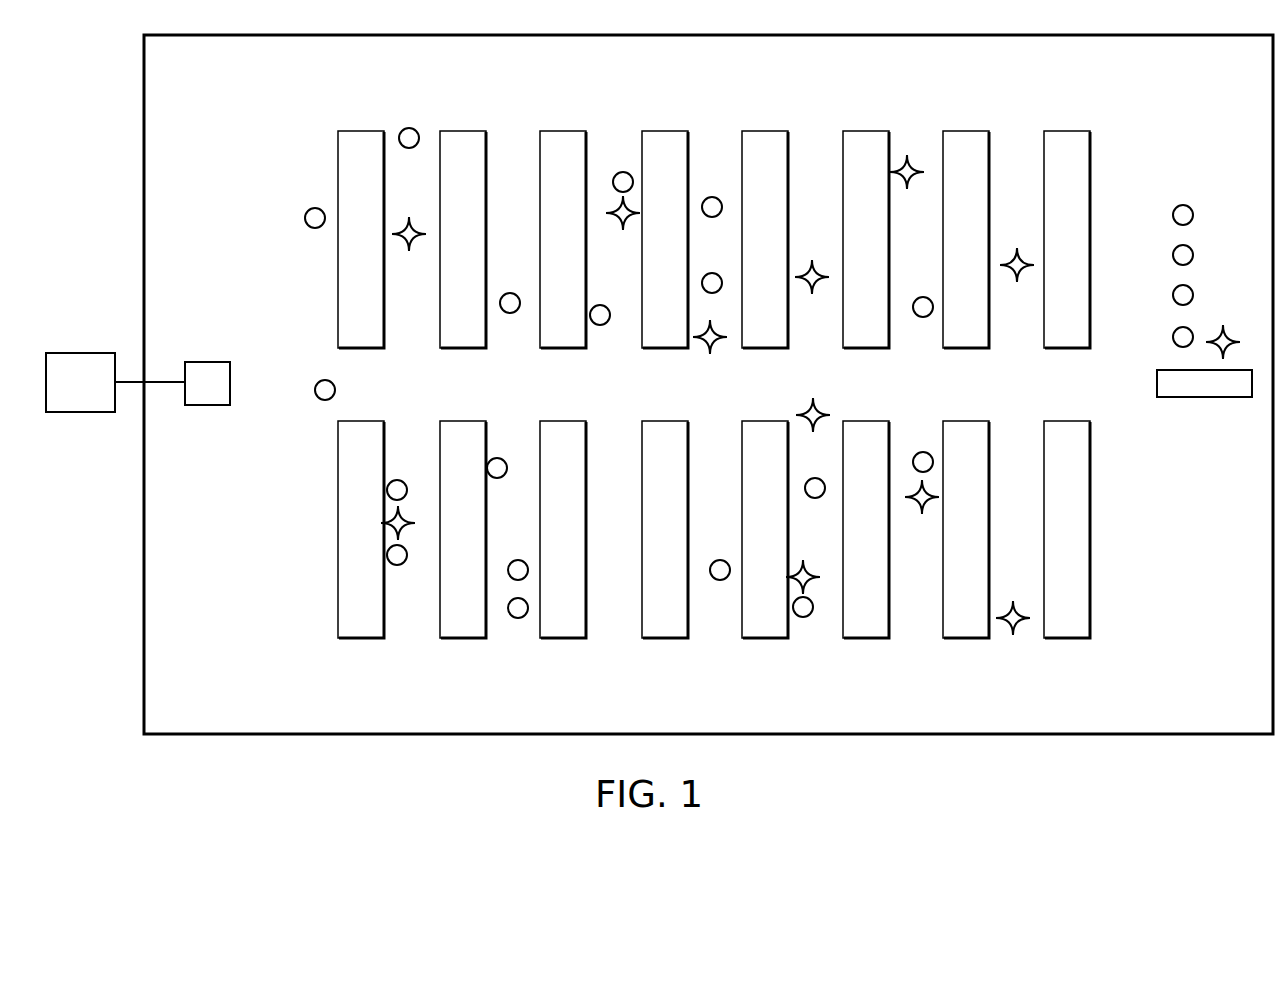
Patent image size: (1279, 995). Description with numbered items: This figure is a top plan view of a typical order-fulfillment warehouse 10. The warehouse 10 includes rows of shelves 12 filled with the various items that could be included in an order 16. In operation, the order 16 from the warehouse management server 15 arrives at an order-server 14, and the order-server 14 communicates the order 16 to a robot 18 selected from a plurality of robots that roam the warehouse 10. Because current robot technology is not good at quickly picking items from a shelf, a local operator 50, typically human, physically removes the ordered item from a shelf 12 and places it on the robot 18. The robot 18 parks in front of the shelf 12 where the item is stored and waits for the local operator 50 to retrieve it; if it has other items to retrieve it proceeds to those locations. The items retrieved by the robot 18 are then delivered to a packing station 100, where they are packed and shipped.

The order-fulfillment warehouse 10 is at (260, 126).
The shelves 12 is at (337, 565).
The order-server 14 is at (207, 406).
The warehouse management server 15 is at (79, 413).
The order 16 is at (160, 380).
The robot 18 is at (305, 218).
The local operator 50 is at (409, 252).
The packing station 100 is at (1203, 398).